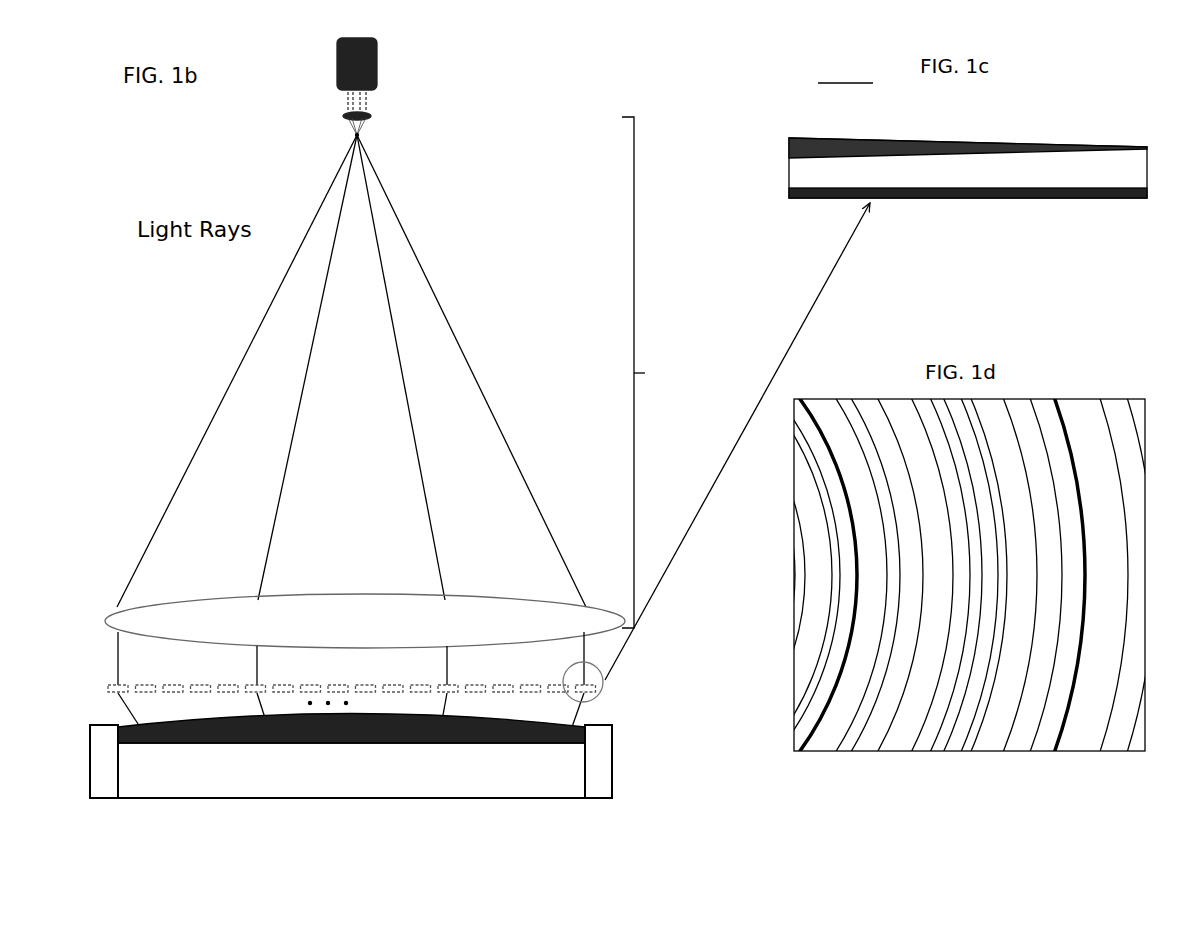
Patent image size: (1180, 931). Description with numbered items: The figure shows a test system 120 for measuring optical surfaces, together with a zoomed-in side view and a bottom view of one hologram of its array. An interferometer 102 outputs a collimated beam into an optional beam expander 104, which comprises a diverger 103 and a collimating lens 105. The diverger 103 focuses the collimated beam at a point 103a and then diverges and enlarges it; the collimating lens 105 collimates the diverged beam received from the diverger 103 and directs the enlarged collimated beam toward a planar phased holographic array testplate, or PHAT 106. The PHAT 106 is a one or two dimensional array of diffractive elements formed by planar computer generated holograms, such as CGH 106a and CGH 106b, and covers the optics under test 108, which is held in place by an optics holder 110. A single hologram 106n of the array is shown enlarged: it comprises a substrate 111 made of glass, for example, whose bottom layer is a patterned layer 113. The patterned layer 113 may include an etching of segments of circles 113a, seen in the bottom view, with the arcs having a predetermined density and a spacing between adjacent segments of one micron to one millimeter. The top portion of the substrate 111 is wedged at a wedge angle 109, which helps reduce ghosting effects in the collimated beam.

In FIG. 1B, the interferometer 102 is at (382, 64).
In FIG. 1B, the diverger 103 is at (372, 116).
In FIG. 1B, the focal point 103a is at (364, 138).
In FIG. 1B, the beam expander 104 is at (661, 372).
In FIG. 1B, the collimating lens 105 is at (480, 595).
In FIG. 1B, the phased holographic array testplate (PHAT) 106 is at (371, 678).
In FIG. 1B, the CGH 106a is at (108, 690).
In FIG. 1B, the CGH 106b is at (148, 694).
In FIG. 1B, the single hologram 106n is at (592, 690).
In FIG. 1C, the single hologram 106n is at (952, 158).
In FIG. 1B, the optics under test 108 is at (466, 721).
In FIG. 1C, the wedge angle 109 is at (850, 166).
In FIG. 1B, the optics holder 110 is at (614, 779).
In FIG. 1C, the substrate 111 is at (1118, 176).
In FIG. 1C, the patterned layer 113 is at (1036, 194).
In FIG. 1D, the patterned layer 113 is at (577, 465).
In FIG. 1D, the segments of circles 113a is at (803, 748).
In FIG. 1B, the test system 120 is at (541, 66).